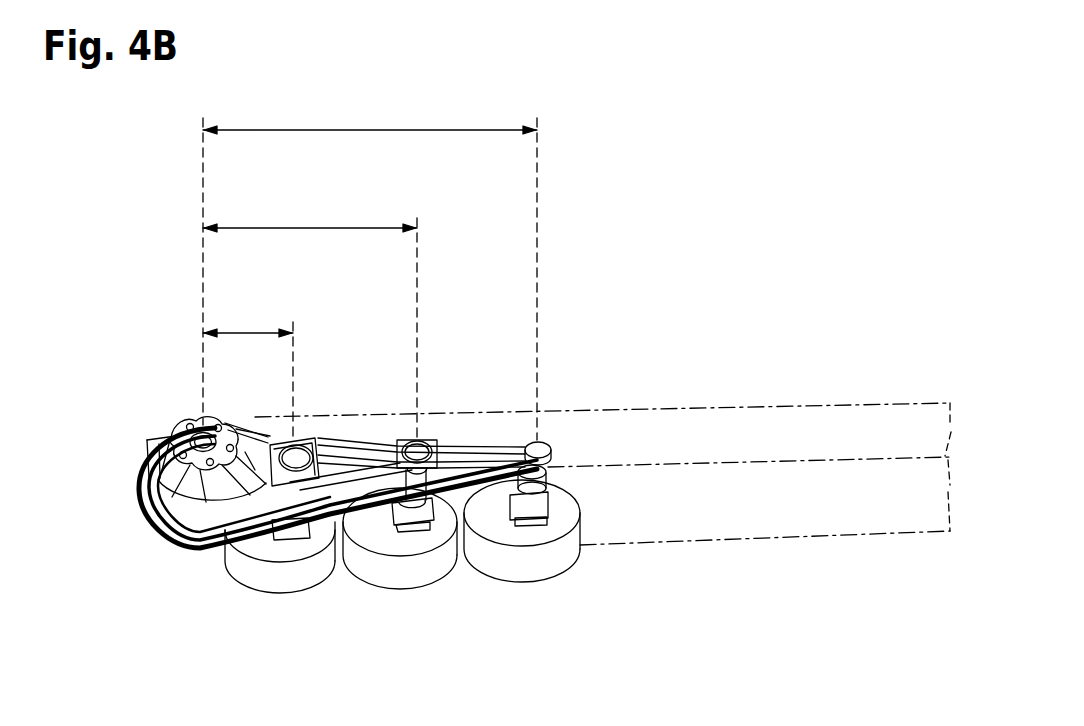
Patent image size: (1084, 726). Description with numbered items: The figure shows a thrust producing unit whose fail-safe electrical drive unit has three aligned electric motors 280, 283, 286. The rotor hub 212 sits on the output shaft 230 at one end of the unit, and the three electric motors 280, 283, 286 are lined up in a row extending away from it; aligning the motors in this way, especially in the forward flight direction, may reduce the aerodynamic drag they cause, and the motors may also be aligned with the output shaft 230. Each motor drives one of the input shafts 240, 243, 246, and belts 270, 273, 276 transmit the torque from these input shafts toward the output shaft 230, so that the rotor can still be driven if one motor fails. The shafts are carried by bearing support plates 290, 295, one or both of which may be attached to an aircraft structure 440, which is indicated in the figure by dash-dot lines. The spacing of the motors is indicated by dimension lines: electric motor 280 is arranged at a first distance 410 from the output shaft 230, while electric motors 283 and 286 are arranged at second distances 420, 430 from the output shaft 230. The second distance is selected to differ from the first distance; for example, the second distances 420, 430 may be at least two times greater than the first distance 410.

The rotor hub 212 is at (183, 428).
The output shaft 230 is at (188, 418).
The input shaft 240 is at (299, 441).
The input shaft 243 is at (422, 438).
The input shaft 246 is at (546, 441).
The belt 270 is at (243, 560).
The belt 273 is at (333, 520).
The belt 276 is at (498, 473).
The electric motor 280 is at (285, 580).
The electric motor 283 is at (412, 570).
The electric motor 286 is at (550, 567).
The bearing support plate 290 is at (178, 553).
The bearing support plate 295 is at (150, 455).
The first distance 410 is at (248, 333).
The second distance 420 is at (309, 228).
The second distance 430 is at (370, 130).
The aircraft structure 440 is at (815, 535).